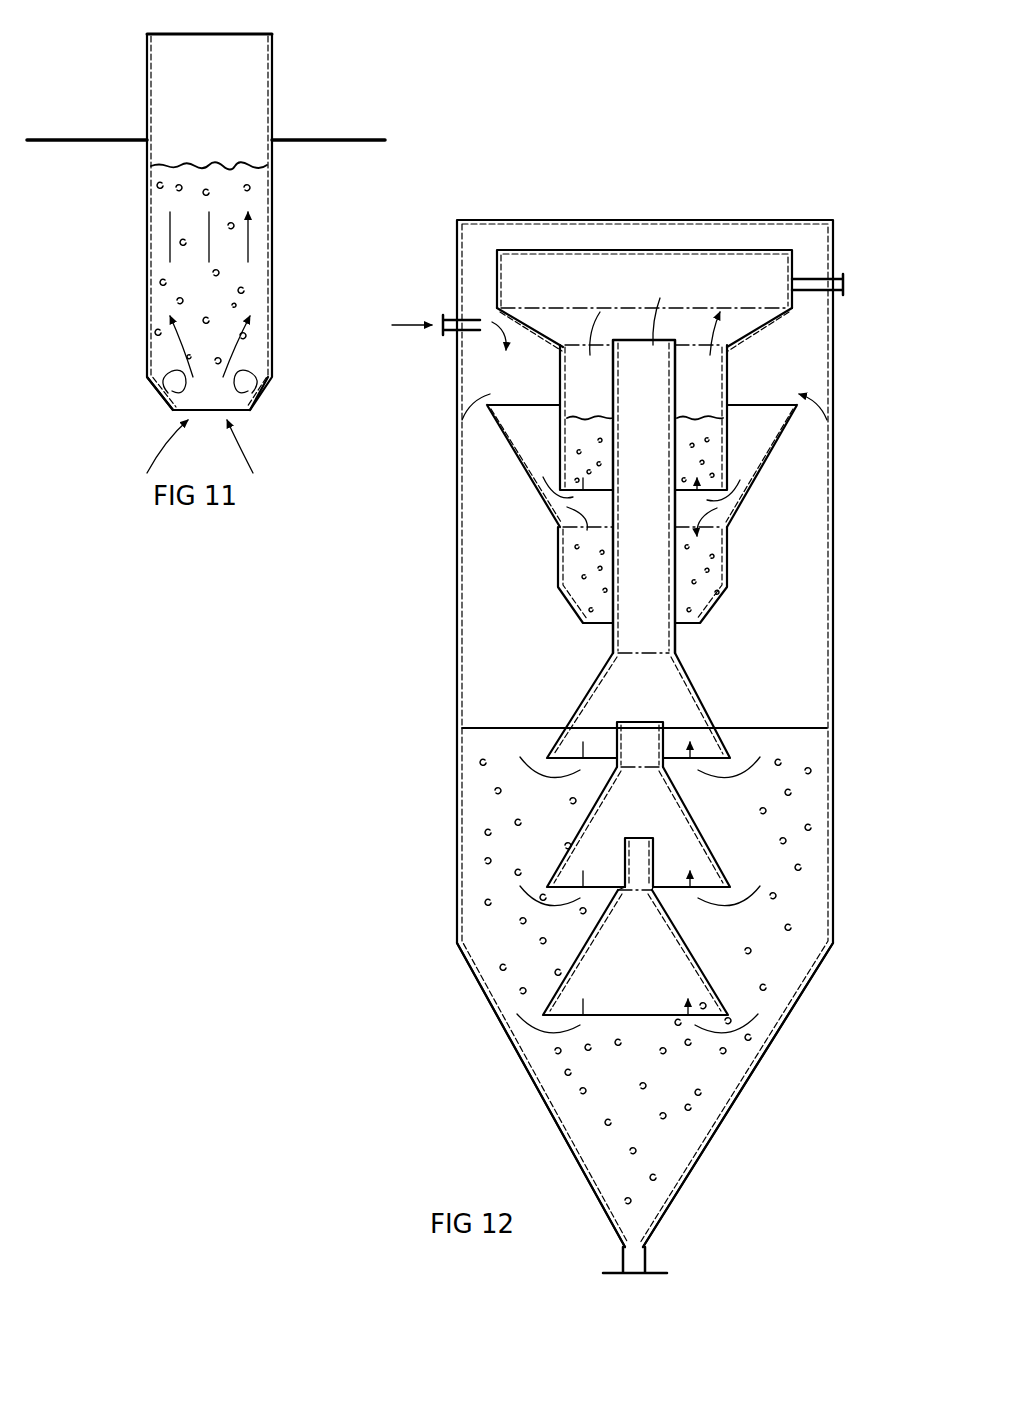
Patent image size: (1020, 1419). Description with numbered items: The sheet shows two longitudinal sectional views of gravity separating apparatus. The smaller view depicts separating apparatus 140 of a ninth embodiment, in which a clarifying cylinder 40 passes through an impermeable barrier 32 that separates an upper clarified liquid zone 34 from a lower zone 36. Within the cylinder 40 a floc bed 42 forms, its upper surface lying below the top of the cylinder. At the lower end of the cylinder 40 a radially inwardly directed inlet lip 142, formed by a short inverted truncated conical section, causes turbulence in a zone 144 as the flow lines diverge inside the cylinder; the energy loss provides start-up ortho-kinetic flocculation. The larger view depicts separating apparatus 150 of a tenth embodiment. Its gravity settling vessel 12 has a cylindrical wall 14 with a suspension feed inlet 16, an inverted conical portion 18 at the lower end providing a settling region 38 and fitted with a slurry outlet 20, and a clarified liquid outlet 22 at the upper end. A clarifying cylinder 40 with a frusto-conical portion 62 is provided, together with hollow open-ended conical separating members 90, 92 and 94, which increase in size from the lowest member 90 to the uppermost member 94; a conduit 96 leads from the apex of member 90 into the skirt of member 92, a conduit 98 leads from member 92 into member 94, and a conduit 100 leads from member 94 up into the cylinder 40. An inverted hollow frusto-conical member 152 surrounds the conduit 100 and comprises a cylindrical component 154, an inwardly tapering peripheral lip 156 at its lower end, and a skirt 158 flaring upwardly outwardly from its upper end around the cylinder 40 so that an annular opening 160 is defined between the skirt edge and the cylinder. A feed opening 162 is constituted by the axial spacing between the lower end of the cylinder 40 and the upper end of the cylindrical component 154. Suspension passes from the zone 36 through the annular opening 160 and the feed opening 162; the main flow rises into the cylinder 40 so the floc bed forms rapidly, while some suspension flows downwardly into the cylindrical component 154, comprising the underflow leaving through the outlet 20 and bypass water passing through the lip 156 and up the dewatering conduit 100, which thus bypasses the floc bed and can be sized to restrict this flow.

In FIG. 12, the gravity settling vessel 12 is at (890, 512).
In FIG. 12, the cylindrical wall 14 is at (830, 674).
In FIG. 12, the suspension feed inlet 16 is at (447, 333).
In FIG. 12, the inverted conical portion 18 is at (733, 1107).
In FIG. 12, the slurry outlet 20 is at (647, 1262).
In FIG. 12, the clarified liquid outlet 22 is at (842, 278).
In FIG. 11, the impermeable barrier 32 is at (76, 140).
In FIG. 11, the clarified liquid zone 34 is at (340, 92).
In FIG. 12, the clarified liquid zone 34 is at (528, 283).
In FIG. 11, the lower zone 36 is at (327, 217).
In FIG. 12, the lower zone 36 is at (787, 642).
In FIG. 12, the settling region 38 is at (795, 912).
In FIG. 11, the clarifying cylinder 40 is at (147, 52).
In FIG. 12, the clarifying cylinder 40 is at (728, 367).
In FIG. 11, the floc bed 42 is at (232, 188).
In FIG. 12, the frusto-conical portion 62 is at (770, 324).
In FIG. 12, the separating member 90 is at (697, 958).
In FIG. 12, the separating member 92 is at (705, 840).
In FIG. 12, the separating member 94 is at (705, 705).
In FIG. 12, the conduit 96 is at (624, 858).
In FIG. 12, the conduit 98 is at (615, 728).
In FIG. 12, the conduit 100 is at (613, 634).
In FIG. 11, the separating apparatus 140 is at (415, 48).
In FIG. 11, the inlet lip 142 is at (268, 387).
In FIG. 11, the turbulence zone 144 is at (170, 400).
In FIG. 12, the separating apparatus 150 is at (410, 690).
In FIG. 12, the inverted hollow frusto-conical member 152 is at (752, 503).
In FIG. 12, the cylindrical component 154 is at (728, 562).
In FIG. 12, the peripheral lip 156 is at (715, 603).
In FIG. 12, the skirt 158 is at (775, 450).
In FIG. 12, the annular opening 160 is at (768, 395).
In FIG. 12, the feed opening 162 is at (555, 522).